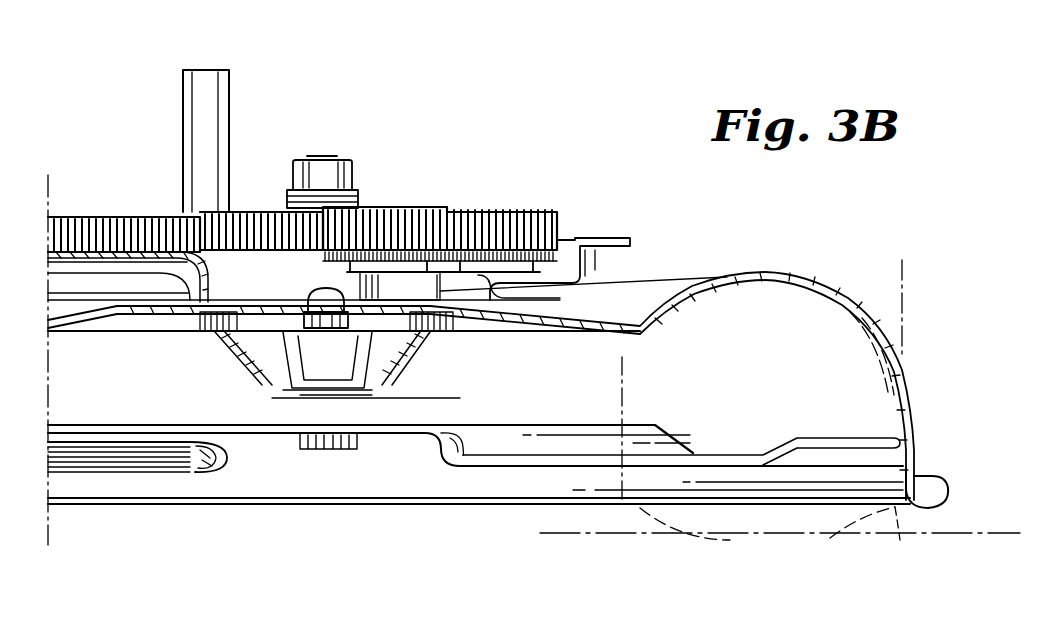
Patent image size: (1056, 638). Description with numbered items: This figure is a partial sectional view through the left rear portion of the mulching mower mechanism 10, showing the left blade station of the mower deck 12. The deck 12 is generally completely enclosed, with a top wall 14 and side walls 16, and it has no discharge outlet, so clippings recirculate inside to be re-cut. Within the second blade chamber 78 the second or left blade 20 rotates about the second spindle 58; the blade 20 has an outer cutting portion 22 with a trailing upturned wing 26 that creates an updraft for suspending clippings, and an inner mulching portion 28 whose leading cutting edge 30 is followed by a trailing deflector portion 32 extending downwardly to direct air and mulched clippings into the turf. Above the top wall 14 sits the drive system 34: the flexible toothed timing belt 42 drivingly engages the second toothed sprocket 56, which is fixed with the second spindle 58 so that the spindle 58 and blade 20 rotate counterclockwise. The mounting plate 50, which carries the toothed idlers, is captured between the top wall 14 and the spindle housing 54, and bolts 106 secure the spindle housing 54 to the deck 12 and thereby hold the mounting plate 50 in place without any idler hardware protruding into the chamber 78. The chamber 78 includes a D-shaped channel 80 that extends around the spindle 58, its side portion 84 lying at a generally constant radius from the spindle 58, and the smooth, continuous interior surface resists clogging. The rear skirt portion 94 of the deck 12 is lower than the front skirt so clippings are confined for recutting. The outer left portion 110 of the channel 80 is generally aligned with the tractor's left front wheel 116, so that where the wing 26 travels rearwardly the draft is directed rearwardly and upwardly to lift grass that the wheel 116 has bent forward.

The mulching mower mechanism 10 is at (540, 148).
The mower deck 12 is at (385, 506).
The top wall 14 is at (615, 325).
The side walls 16 is at (912, 382).
The second blade 20 is at (640, 466).
The outer cutting portion 22 is at (822, 463).
The trailing upturned wing 26 is at (860, 444).
The inner mulching portion 28 is at (134, 457).
The leading cutting edge 30 is at (158, 428).
The trailing deflector portion 32 is at (100, 472).
The drive system 34 is at (135, 170).
The flexible toothed timing belt 42 is at (95, 240).
The mounting plate 50 is at (605, 265).
The spindle housing 54 is at (372, 364).
The second toothed sprocket 56 is at (245, 236).
The second spindle 58 is at (330, 157).
The second blade chamber 78 is at (604, 373).
The channel 80 is at (782, 357).
The side portion of the channel 84 is at (818, 397).
The rear skirt portion 94 is at (285, 506).
The bolts 106 is at (332, 292).
The outer left portion of the channel 110 is at (925, 500).
The left front wheel 116 is at (900, 540).